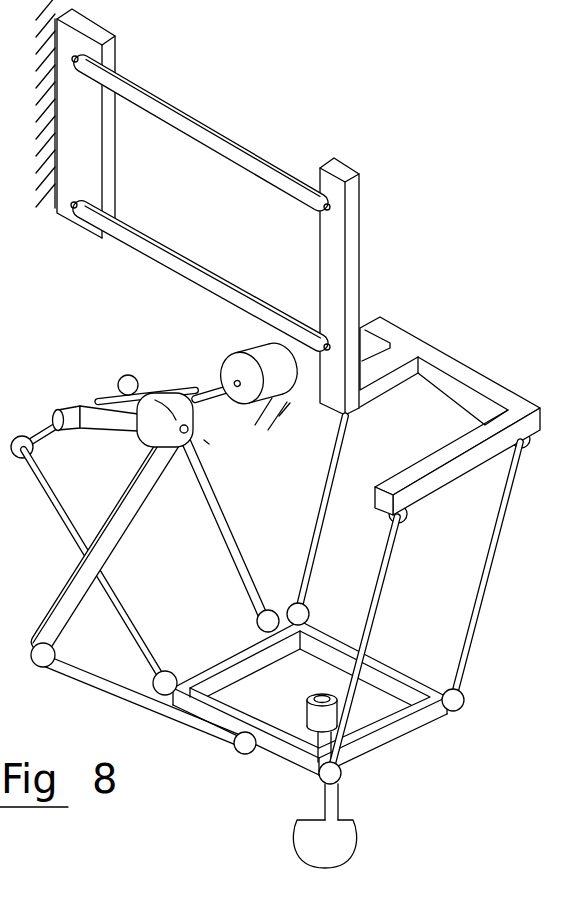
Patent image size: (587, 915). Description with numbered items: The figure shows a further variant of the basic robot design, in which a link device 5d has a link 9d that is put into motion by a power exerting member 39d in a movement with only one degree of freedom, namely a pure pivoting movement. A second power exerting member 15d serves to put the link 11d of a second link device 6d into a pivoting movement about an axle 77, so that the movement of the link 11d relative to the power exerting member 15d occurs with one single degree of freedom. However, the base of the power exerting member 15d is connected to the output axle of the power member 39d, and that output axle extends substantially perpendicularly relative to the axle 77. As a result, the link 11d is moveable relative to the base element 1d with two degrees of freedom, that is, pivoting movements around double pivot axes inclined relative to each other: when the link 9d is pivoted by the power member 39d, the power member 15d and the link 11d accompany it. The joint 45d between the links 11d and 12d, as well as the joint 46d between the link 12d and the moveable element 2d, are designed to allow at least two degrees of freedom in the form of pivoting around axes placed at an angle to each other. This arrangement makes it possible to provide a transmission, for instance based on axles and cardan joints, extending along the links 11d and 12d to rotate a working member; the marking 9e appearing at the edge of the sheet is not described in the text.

The base element 1d is at (117, 213).
The moveable element 2d is at (403, 743).
The link device 5d is at (69, 378).
The link device 6d is at (48, 598).
The link 9d is at (132, 406).
The link 11d is at (123, 527).
The link 12d is at (125, 693).
The power exerting member 15d is at (145, 439).
The power exerting member 39d is at (258, 357).
The joint 45d is at (45, 668).
The joint 46d is at (249, 755).
The axle 77 is at (238, 454).
The drive arm 9e is at (416, 904).